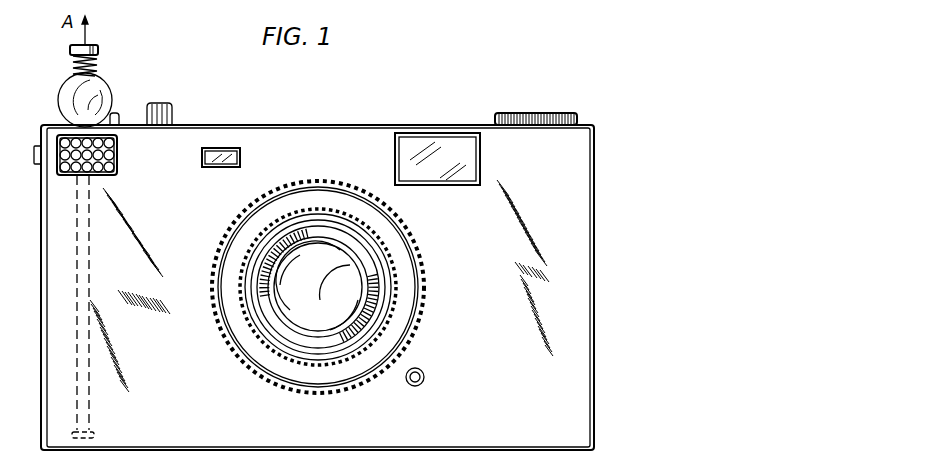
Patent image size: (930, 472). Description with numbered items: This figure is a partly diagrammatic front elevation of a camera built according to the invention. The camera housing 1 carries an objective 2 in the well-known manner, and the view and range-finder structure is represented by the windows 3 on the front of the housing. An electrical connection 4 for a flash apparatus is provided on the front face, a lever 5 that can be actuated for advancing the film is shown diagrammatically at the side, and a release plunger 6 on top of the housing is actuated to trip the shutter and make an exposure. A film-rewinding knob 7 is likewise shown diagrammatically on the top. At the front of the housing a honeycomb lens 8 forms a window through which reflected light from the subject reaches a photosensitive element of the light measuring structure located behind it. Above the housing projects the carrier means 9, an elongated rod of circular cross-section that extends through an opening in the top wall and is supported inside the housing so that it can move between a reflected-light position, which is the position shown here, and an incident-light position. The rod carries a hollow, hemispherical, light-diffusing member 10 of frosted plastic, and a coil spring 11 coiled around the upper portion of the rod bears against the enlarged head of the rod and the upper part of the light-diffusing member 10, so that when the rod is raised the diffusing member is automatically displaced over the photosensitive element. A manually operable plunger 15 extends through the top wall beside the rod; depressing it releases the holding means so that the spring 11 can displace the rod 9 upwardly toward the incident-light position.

The camera housing 1 is at (555, 288).
The objective 2 is at (300, 308).
The windows 3 is at (398, 160).
The electrical connection 4 is at (423, 372).
The lever 5 is at (36, 150).
The release plunger 6 is at (160, 104).
The film-rewinding knob 7 is at (522, 113).
The honeycomb lens 8 is at (118, 152).
The carrier means 9 is at (70, 50).
The light-diffusing member 10 is at (59, 97).
The coil spring 11 is at (97, 70).
The plunger 15 is at (117, 115).